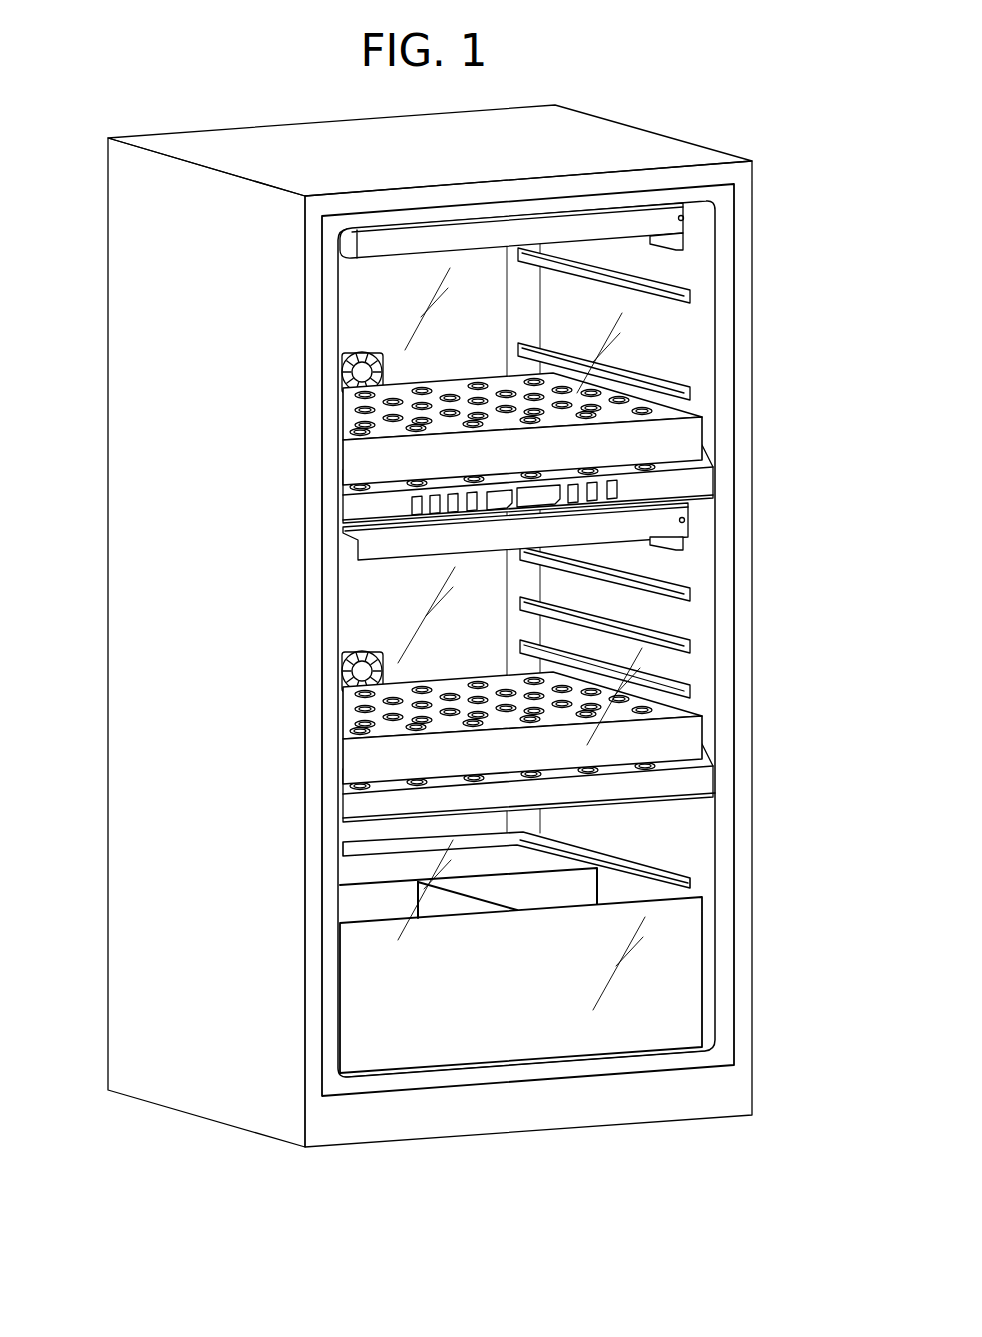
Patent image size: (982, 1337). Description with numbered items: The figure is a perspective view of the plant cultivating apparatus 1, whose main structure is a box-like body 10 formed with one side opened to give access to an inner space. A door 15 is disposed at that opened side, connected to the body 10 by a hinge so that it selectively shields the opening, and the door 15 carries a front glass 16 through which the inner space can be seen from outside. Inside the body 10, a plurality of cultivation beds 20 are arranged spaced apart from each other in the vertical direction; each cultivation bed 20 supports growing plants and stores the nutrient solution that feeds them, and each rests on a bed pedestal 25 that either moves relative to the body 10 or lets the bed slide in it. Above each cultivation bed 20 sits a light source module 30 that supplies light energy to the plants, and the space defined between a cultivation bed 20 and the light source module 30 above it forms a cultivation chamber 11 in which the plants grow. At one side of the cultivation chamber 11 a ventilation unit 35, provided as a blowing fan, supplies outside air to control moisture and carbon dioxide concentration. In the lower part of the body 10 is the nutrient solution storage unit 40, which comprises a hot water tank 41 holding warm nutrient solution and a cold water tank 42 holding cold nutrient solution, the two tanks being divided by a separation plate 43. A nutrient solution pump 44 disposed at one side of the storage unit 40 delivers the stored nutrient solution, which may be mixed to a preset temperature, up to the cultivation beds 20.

The plant cultivating apparatus 1 is at (435, 613).
The body 10 is at (143, 542).
The cultivation chamber 11 is at (467, 317).
The door 15 is at (332, 1037).
The front glass 16 is at (392, 1055).
The cultivation bed 20 is at (365, 464).
The bed pedestal 25 is at (707, 485).
The light source module 30 is at (375, 243).
The ventilation unit 35 is at (362, 673).
The nutrient solution storage unit 40 is at (443, 1006).
The hot water tank 41 is at (365, 905).
The cold water tank 42 is at (583, 887).
The separation plate 43 is at (455, 910).
The nutrient solution pump 44 is at (537, 858).